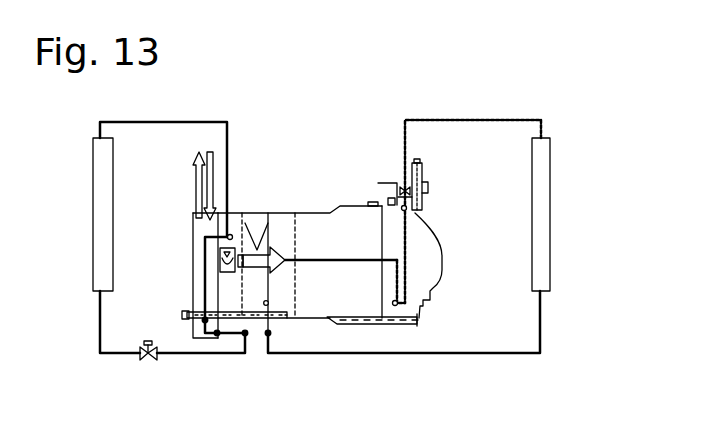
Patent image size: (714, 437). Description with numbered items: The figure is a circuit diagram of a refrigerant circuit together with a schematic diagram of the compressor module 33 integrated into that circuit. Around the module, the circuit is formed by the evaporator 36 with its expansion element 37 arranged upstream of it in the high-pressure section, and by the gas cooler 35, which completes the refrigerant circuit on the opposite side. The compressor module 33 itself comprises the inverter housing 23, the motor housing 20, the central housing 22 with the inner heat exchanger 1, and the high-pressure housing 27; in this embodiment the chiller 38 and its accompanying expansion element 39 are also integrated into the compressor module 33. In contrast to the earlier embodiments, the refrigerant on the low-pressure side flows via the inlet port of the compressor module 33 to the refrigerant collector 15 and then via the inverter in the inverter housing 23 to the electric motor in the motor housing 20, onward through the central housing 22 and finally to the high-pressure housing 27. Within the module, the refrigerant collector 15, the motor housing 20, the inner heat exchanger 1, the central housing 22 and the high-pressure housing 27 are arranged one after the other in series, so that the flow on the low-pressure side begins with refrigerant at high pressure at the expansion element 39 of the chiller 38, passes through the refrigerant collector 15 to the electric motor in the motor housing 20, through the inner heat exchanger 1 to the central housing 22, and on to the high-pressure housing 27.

The inner heat exchanger 1 is at (255, 218).
The refrigerant collector 15 is at (238, 208).
The motor housing 20 is at (305, 217).
The central housing 22 is at (363, 305).
The inverter housing 23 is at (280, 297).
The high-pressure housing 27 is at (440, 288).
The compressor module 33 is at (362, 204).
The gas cooler 35 is at (543, 252).
The evaporator 36 is at (96, 166).
The expansion element 37 is at (145, 357).
The chiller 38 is at (197, 257).
The expansion element 39 is at (207, 337).